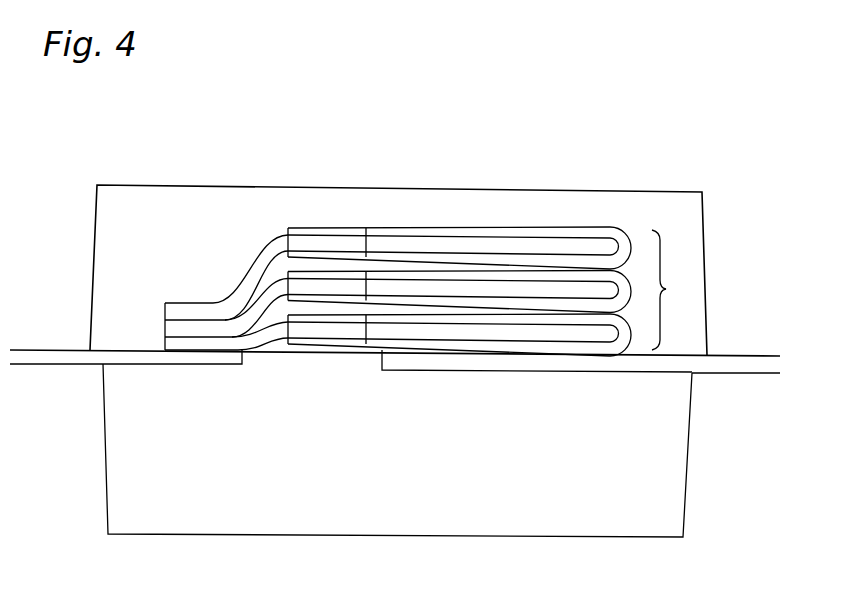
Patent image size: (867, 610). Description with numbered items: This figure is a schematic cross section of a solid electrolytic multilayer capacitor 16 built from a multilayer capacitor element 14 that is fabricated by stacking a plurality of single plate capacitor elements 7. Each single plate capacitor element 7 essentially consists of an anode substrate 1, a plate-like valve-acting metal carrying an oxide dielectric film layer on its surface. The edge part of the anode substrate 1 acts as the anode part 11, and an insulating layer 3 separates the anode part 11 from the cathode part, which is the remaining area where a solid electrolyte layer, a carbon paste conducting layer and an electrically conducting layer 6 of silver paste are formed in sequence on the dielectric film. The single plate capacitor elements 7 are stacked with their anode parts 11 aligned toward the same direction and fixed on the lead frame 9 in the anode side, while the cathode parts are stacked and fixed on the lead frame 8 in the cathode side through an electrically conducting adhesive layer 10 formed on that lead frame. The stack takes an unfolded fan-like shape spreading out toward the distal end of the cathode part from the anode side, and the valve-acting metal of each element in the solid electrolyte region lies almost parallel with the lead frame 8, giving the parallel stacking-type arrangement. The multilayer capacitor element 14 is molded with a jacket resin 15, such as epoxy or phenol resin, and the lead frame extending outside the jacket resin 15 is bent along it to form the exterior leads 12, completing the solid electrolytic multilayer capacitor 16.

The anode substrate 1 is at (178, 310).
The insulating layer 3 is at (315, 232).
The electrically conducting layer of silver paste 6 is at (517, 227).
The single plate capacitor element 7 is at (625, 247).
The lead frame in the cathode side 8 is at (498, 362).
The lead frame in the anode side 9 is at (173, 358).
The electrically conducting adhesive layer 10 is at (490, 268).
The anode part 11 is at (233, 287).
The exterior lead 12 is at (35, 358).
The multilayer capacitor element 14 is at (674, 290).
The jacket resin 15 is at (280, 487).
The solid electrolytic multilayer capacitor 16 is at (148, 185).